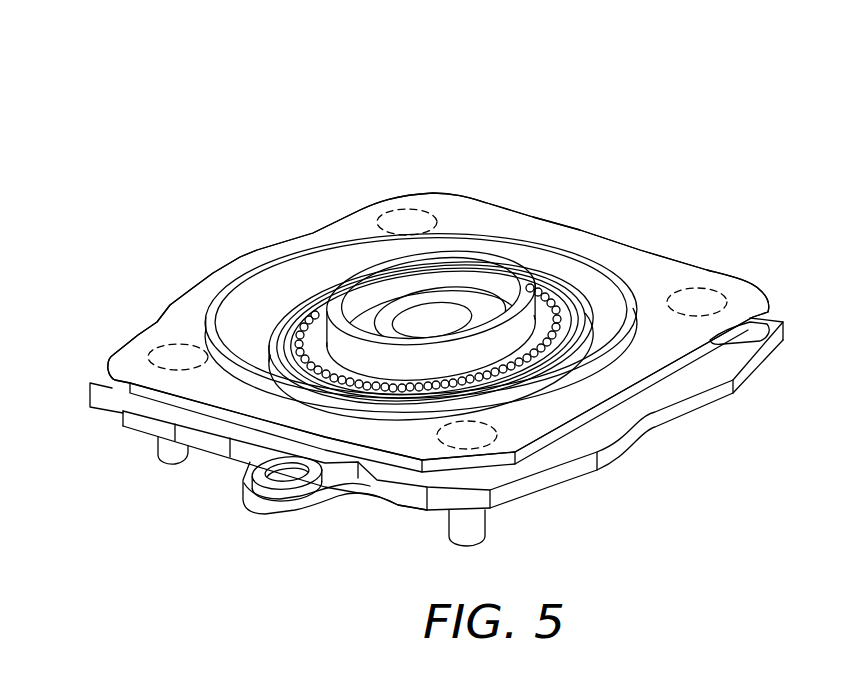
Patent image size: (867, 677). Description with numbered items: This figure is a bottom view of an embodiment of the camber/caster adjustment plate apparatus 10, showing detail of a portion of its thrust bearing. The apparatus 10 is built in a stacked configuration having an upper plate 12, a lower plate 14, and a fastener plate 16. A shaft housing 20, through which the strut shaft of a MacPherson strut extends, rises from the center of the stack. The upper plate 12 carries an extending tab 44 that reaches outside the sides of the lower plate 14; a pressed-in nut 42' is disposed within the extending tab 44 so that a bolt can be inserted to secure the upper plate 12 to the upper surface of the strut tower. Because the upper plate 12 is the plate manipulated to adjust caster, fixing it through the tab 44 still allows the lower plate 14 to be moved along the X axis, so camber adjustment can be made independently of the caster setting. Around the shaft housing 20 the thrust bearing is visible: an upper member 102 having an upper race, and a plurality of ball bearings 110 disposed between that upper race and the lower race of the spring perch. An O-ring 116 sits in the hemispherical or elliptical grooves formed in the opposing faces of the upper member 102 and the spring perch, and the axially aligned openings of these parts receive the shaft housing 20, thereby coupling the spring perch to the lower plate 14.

The camber/caster adjustment plate apparatus 10 is at (351, 160).
The upper plate 12 is at (143, 437).
The lower plate 14 is at (100, 408).
The fastener plate 16 is at (120, 358).
The shaft housing 20 is at (473, 257).
The pressed-in nut 42' is at (292, 507).
The extending tab 44 is at (257, 507).
The upper member 102 is at (276, 311).
The ball bearings 110 is at (558, 304).
The O-ring 116 is at (580, 307).